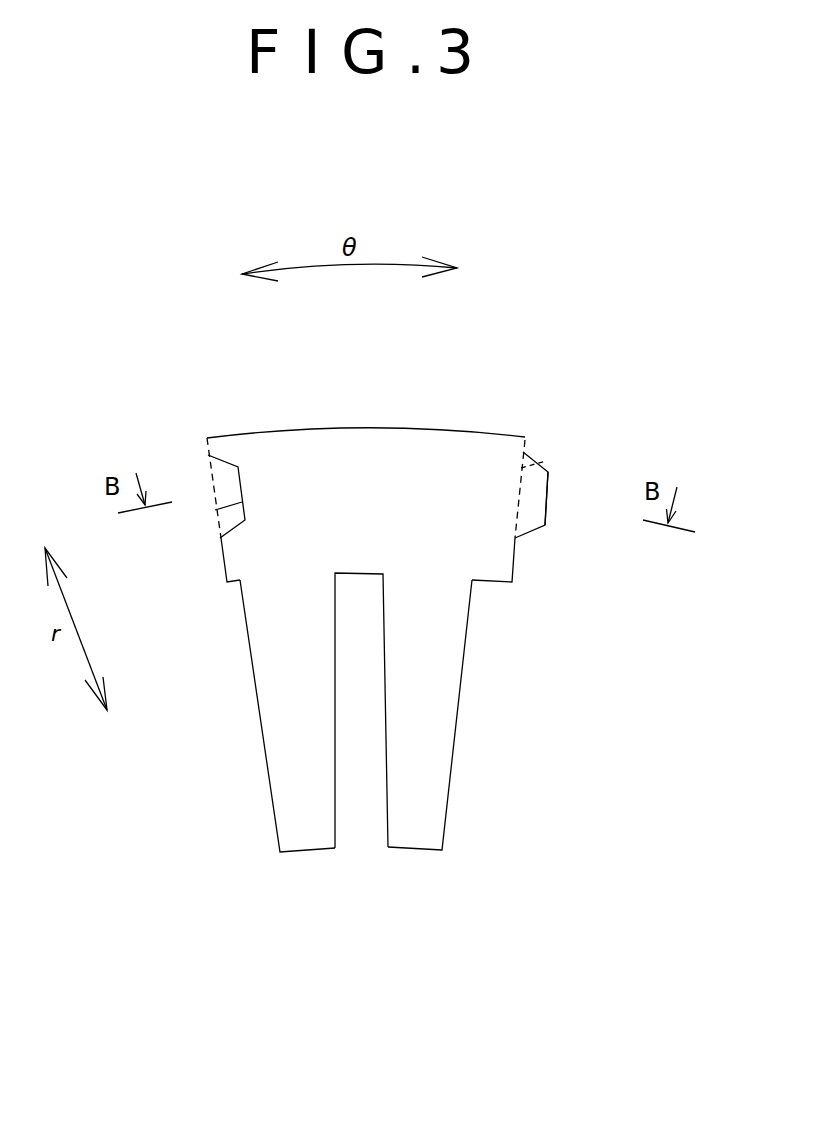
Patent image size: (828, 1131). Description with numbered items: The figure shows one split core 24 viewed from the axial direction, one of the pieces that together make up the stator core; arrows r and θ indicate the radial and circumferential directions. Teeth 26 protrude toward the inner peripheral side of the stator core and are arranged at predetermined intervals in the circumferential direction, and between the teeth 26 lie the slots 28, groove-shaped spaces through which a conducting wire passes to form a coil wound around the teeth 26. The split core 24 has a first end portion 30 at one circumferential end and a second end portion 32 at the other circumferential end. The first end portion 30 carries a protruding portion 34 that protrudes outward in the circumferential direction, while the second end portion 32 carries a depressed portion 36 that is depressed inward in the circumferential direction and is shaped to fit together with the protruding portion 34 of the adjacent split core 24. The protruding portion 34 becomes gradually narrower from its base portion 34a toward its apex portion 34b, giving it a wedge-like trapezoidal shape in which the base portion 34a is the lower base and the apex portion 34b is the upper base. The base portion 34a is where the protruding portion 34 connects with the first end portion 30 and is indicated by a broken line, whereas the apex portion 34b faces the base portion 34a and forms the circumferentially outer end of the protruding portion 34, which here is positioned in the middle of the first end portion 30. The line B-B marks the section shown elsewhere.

The split core 24 is at (495, 397).
The teeth 26 is at (305, 845).
The slots 28 is at (353, 793).
The first end portion 30 is at (513, 568).
The second end portion 32 is at (225, 565).
The protruding portion 34 is at (547, 510).
The base portion 34a is at (548, 463).
The apex portion 34b is at (550, 482).
The depressed portion 36 is at (217, 512).